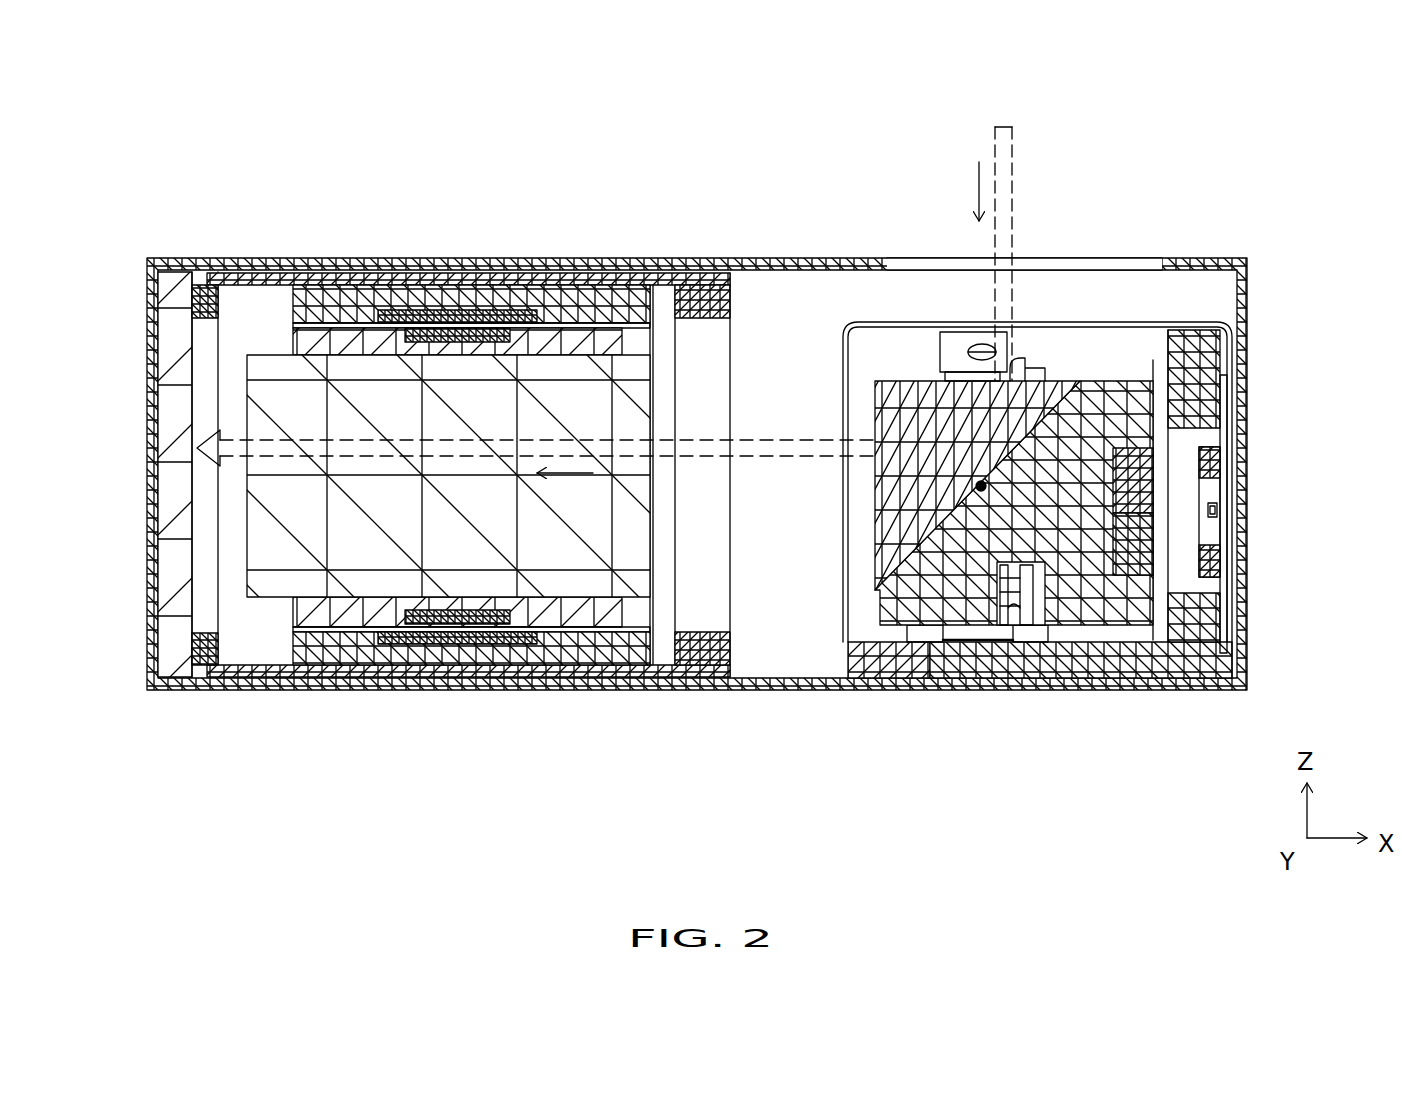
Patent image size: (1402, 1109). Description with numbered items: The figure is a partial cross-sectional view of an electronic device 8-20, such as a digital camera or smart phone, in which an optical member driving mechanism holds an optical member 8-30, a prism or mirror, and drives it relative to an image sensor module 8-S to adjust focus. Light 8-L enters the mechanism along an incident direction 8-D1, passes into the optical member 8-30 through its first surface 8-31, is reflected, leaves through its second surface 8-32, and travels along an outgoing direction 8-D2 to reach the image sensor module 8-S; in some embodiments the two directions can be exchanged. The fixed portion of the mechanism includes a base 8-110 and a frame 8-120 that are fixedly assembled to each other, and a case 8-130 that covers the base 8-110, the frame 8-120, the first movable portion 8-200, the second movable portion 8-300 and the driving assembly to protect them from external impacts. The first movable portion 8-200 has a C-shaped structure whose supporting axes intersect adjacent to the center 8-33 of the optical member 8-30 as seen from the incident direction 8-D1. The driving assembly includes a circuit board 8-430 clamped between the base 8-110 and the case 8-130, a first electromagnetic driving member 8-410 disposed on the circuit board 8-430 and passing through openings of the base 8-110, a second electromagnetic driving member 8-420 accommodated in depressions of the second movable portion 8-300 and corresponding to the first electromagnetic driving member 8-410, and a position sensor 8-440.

The image sensor module 8-S is at (178, 517).
The electronic device 8-20 is at (637, 272).
The second surface 8-32 is at (873, 418).
The optical member 8-30 is at (912, 400).
The incident direction 8-D1 is at (943, 191).
The light 8-L is at (1004, 125).
The first surface 8-31 is at (1055, 380).
The second movable portion 8-300 is at (1130, 385).
The first electromagnetic driving member 8-410 is at (1212, 463).
The position sensor 8-440 is at (1218, 510).
The circuit board 8-430 is at (1222, 537).
The case 8-130 is at (1235, 630).
The outgoing direction 8-D2 is at (560, 475).
The frame 8-120 is at (878, 660).
The center 8-33 is at (981, 490).
The first movable portion 8-200 is at (1020, 612).
The base 8-110 is at (1093, 660).
The second electromagnetic driving member 8-420 is at (1128, 565).